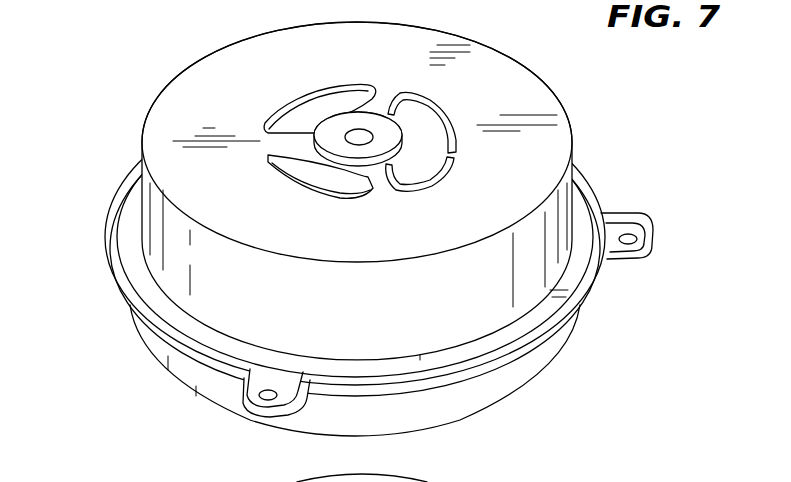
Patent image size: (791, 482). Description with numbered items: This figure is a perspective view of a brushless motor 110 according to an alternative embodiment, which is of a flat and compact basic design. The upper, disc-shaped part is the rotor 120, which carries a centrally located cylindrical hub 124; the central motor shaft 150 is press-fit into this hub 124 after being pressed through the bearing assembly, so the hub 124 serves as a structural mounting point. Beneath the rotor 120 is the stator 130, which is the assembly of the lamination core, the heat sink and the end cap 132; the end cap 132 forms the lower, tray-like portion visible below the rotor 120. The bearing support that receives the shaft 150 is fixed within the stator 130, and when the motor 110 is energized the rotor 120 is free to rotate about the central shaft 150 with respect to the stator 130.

The motor 110 is at (358, 230).
The rotor 120 is at (357, 186).
The cylindrical hub 124 is at (360, 119).
The central motor shaft 150 is at (362, 134).
The stator 130 is at (358, 268).
The end cap 132 is at (212, 398).